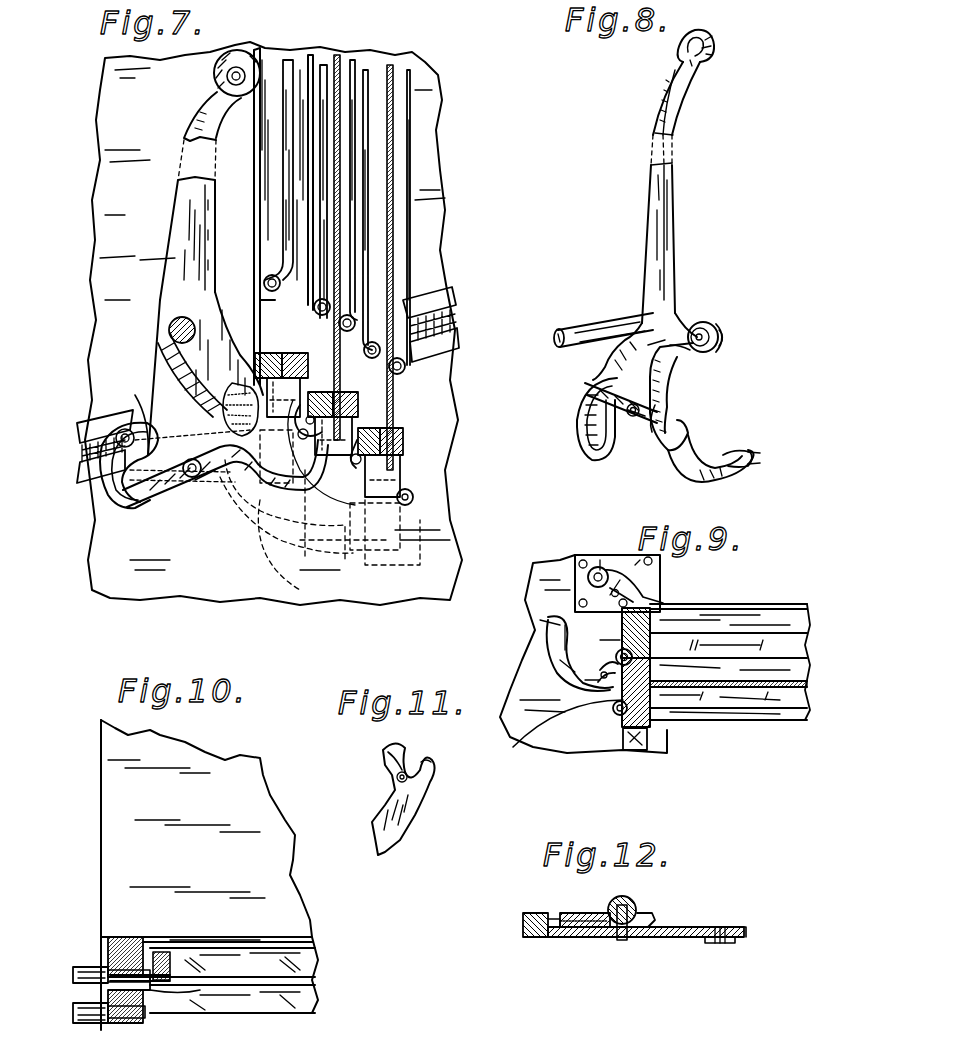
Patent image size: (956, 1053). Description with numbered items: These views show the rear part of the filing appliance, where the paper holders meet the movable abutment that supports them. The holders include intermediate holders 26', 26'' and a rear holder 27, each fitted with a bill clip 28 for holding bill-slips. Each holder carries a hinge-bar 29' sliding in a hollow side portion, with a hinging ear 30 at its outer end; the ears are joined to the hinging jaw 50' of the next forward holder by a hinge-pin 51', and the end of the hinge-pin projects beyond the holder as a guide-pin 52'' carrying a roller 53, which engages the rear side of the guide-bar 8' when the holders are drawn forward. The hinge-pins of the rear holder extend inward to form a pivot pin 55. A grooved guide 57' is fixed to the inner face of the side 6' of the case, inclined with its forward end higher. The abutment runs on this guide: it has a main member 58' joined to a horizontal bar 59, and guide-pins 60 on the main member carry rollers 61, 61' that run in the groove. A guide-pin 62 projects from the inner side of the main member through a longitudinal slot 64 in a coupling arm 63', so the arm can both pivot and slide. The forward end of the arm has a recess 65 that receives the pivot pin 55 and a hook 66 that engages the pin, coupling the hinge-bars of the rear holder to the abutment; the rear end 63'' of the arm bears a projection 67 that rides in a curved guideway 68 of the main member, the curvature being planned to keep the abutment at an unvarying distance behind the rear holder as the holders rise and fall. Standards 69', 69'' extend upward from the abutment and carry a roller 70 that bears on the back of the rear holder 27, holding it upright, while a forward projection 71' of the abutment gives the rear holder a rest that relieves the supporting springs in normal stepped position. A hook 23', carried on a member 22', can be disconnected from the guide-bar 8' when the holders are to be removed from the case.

In FIG. 7, the side of the case 6' is at (273, 323).
In FIG. 9, the side of the case 6' is at (583, 664).
In FIG. 10, the side of the case 6' is at (206, 875).
In FIG. 9, the guide-bar 8' is at (663, 742).
In FIG. 9, the bracket plate 22' is at (596, 573).
In FIG. 9, the hook 23' is at (650, 585).
In FIG. 10, the intermediate holder 26' is at (255, 1000).
In FIG. 7, the intermediate holder 26'' is at (365, 242).
In FIG. 9, the intermediate holder 26'' is at (743, 680).
In FIG. 10, the intermediate holder 26'' is at (257, 962).
In FIG. 7, the rear holder 27 is at (288, 60).
In FIG. 9, the rear holder 27 is at (800, 626).
In FIG. 10, the rear holder 27 is at (302, 923).
In FIG. 7, the bill clip 28 is at (355, 185).
In FIG. 7, the hinge-bar 29' is at (354, 467).
In FIG. 10, the hinge-bar 29' is at (106, 959).
In FIG. 7, the hinging ear 30 is at (408, 490).
In FIG. 10, the hinging ear 30 is at (160, 990).
In FIG. 7, the hinging jaw 50' is at (400, 462).
In FIG. 9, the hinging jaw 50' is at (614, 727).
In FIG. 10, the hinging jaw 50' is at (222, 1017).
In FIG. 7, the hinge-pin 51' is at (333, 491).
In FIG. 9, the hinge-pin 51' is at (607, 667).
In FIG. 10, the guide-pin 52'' is at (96, 994).
In FIG. 10, the roller 53 is at (85, 965).
In FIG. 7, the pivot pin 55 is at (365, 432).
In FIG. 9, the pivot pin 55 is at (560, 729).
In FIG. 10, the pivot pin 55 is at (168, 960).
In FIG. 7, the grooved guide 57' is at (290, 385).
In FIG. 7, the main member of the abutment 58' is at (184, 373).
In FIG. 8, the main member of the abutment 58' is at (661, 381).
In FIG. 12, the main member of the abutment 58' is at (607, 905).
In FIG. 7, the horizontal bar 59 is at (170, 324).
In FIG. 8, the horizontal bar 59 is at (585, 326).
In FIG. 8, the guide-pin 60 is at (710, 325).
In FIG. 8, the roller 61 is at (739, 338).
In FIG. 7, the roller 61' is at (119, 411).
In FIG. 7, the guide-pin 62 is at (190, 478).
In FIG. 8, the guide-pin 62 is at (630, 418).
In FIG. 12, the guide-pin 62 is at (621, 940).
In FIG. 7, the coupling arm 63' is at (225, 504).
In FIG. 8, the coupling arm 63' is at (711, 440).
In FIG. 9, the coupling arm 63' is at (555, 653).
In FIG. 11, the coupling arm 63' is at (413, 799).
In FIG. 12, the coupling arm 63' is at (646, 953).
In FIG. 7, the rear end of arm 63'' is at (172, 495).
In FIG. 8, the rear end of arm 63'' is at (602, 398).
In FIG. 12, the rear end of arm 63'' is at (531, 944).
In FIG. 7, the longitudinal slot 64 is at (210, 490).
In FIG. 8, the longitudinal slot 64 is at (640, 420).
In FIG. 12, the longitudinal slot 64 is at (612, 937).
In FIG. 8, the recess 65 is at (752, 458).
In FIG. 11, the recess 65 is at (430, 770).
In FIG. 12, the recess 65 is at (748, 931).
In FIG. 7, the hook 66 is at (358, 455).
In FIG. 8, the hook 66 is at (742, 468).
In FIG. 9, the hook 66 is at (614, 652).
In FIG. 11, the hook 66 is at (386, 750).
In FIG. 12, the hook 66 is at (720, 943).
In FIG. 12, the projection 67 is at (537, 913).
In FIG. 7, the curved guideway 68 is at (112, 495).
In FIG. 8, the curved guideway 68 is at (585, 440).
In FIG. 12, the curved guideway 68 is at (523, 922).
In FIG. 7, the standard 69' is at (184, 196).
In FIG. 8, the standard 69'' is at (650, 192).
In FIG. 7, the roller 70 is at (214, 66).
In FIG. 8, the roller 70 is at (714, 45).
In FIG. 7, the arm or projection 71' is at (221, 413).
In FIG. 8, the arm or projection 71' is at (652, 445).